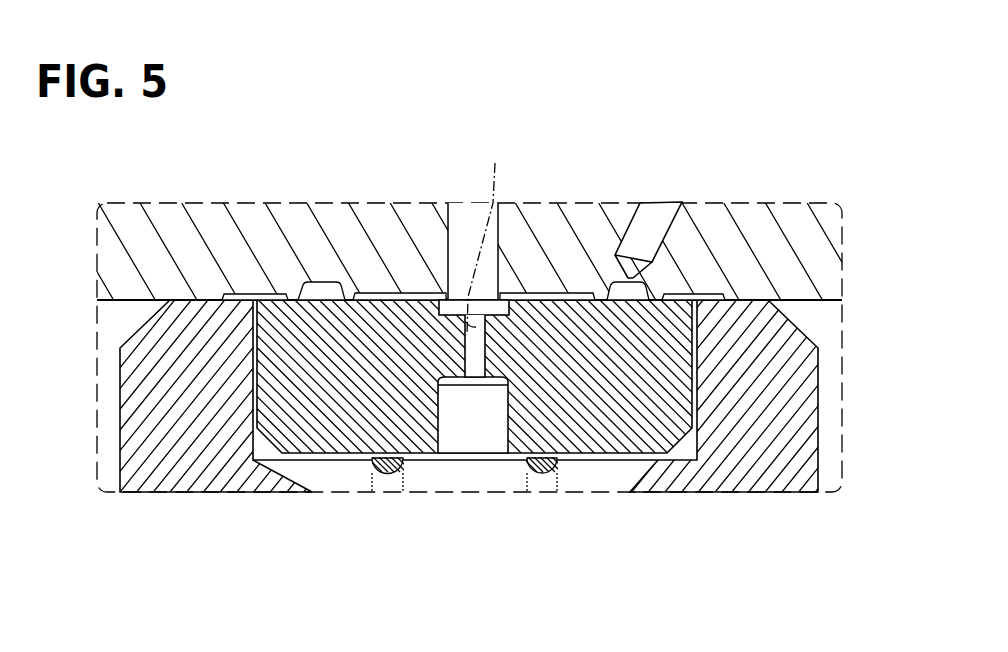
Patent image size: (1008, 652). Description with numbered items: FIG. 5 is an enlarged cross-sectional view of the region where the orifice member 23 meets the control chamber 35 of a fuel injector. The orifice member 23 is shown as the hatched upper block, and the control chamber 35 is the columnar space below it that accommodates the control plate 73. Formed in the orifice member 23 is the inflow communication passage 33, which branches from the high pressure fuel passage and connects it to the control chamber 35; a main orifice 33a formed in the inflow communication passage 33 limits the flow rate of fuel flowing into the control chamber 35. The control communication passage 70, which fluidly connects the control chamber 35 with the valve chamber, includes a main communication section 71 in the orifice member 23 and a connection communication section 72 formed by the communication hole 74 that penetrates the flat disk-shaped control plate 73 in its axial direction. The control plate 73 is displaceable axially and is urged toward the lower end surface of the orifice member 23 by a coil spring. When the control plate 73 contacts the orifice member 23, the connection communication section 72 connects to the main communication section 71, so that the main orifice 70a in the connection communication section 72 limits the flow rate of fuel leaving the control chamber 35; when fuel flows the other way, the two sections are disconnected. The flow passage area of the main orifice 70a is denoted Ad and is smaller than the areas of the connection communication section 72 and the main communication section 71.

The orifice member 23 is at (790, 217).
The inflow communication passage 33 is at (629, 279).
The main orifice 33a is at (625, 275).
The control chamber 35 is at (613, 478).
The control communication passage 70 is at (437, 250).
The main communication section 71 is at (455, 225).
The connection communication section 72 is at (447, 417).
The control plate 73 is at (691, 360).
The communication hole 74 is at (438, 445).
The main orifice 70a is at (475, 367).
The flow passage area Ad is at (491, 233).